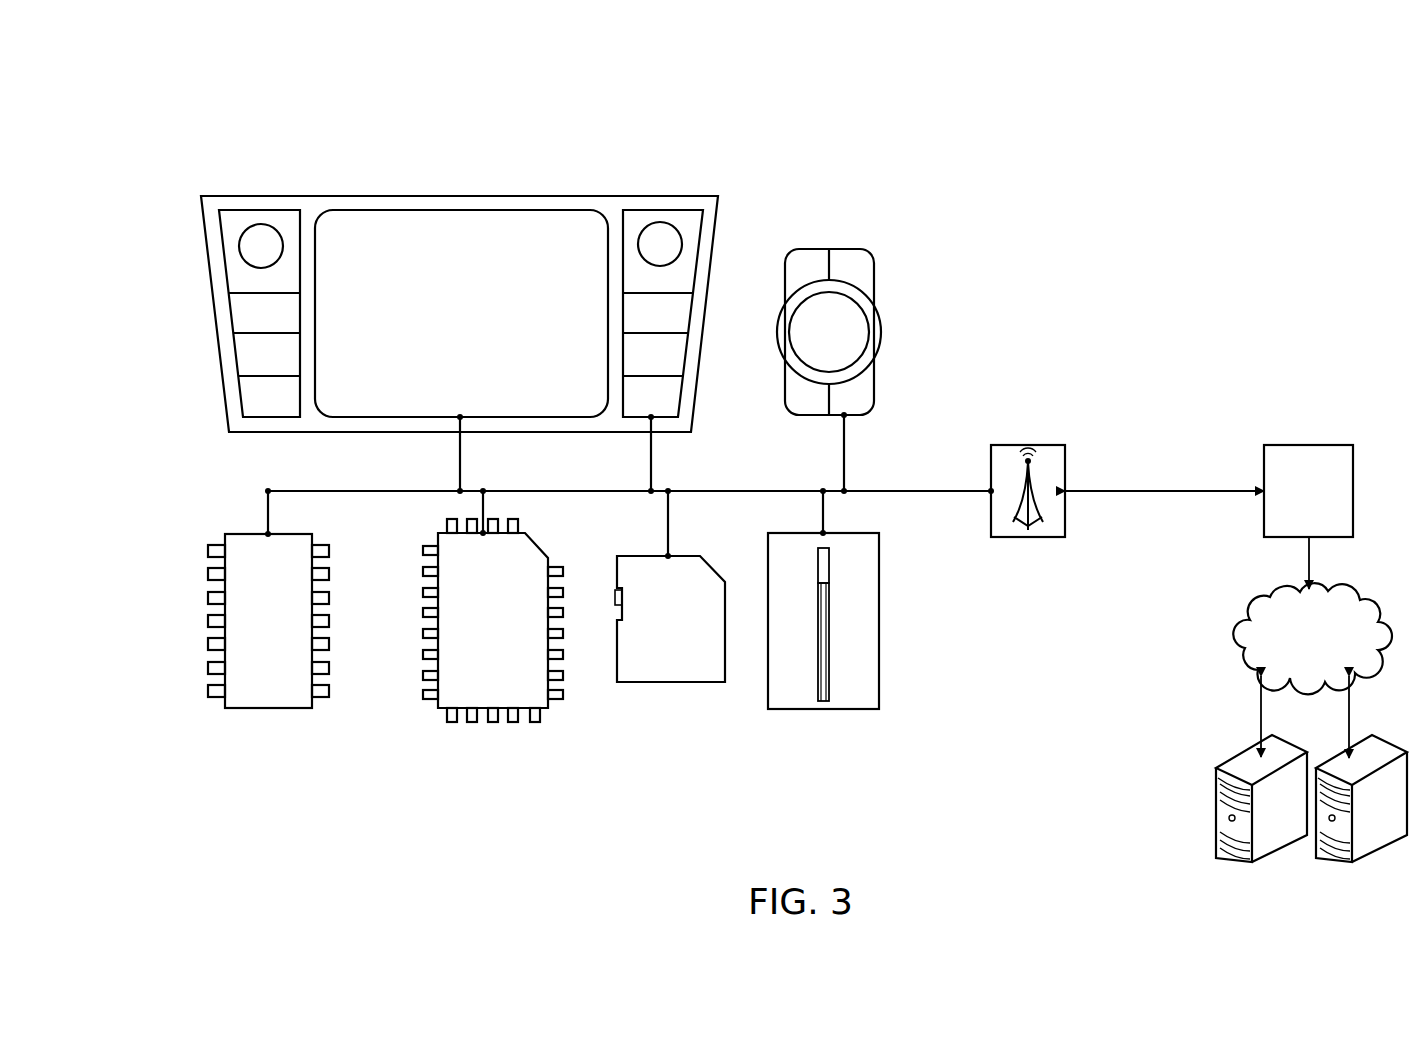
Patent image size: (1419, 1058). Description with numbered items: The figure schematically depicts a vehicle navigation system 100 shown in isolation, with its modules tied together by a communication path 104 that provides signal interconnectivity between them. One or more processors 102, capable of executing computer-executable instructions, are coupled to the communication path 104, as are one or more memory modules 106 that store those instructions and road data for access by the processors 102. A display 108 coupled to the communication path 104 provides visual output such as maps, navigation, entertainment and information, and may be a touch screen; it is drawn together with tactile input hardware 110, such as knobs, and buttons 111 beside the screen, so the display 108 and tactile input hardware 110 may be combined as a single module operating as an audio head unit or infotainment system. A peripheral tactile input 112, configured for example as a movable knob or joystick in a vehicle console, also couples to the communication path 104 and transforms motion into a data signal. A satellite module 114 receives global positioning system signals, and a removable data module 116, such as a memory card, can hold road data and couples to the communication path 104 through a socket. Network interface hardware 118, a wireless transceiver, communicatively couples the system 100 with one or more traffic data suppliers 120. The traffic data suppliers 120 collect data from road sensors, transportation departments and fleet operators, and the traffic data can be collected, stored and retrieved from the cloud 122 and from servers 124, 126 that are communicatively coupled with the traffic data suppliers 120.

The vehicle navigation system 100 is at (156, 120).
The processors 102 is at (503, 723).
The communication path 104 is at (362, 492).
The memory modules 106 is at (268, 709).
The display 108 is at (472, 210).
The tactile input hardware 110 is at (237, 208).
The buttons 111 is at (242, 323).
The peripheral tactile input 112 is at (841, 249).
The satellite module 114 is at (823, 710).
The removable data module 116 is at (668, 683).
The network interface hardware 118 is at (1037, 445).
The traffic data suppliers 120 is at (1311, 445).
The cloud 122 is at (1246, 630).
The server 124 is at (1240, 767).
The server 126 is at (1372, 748).